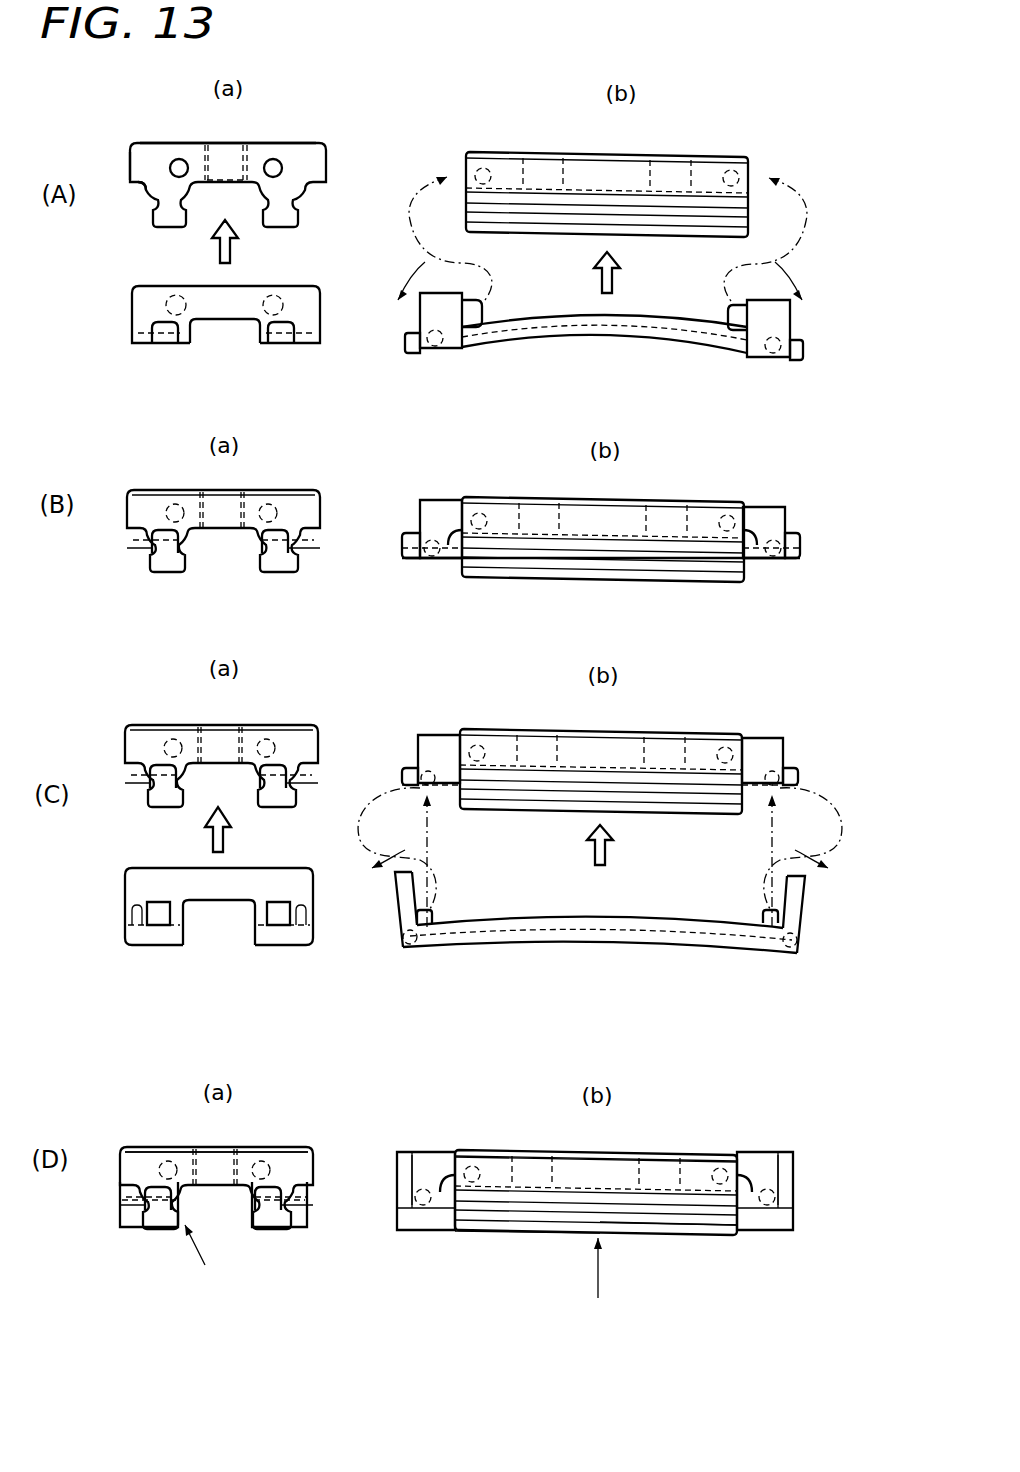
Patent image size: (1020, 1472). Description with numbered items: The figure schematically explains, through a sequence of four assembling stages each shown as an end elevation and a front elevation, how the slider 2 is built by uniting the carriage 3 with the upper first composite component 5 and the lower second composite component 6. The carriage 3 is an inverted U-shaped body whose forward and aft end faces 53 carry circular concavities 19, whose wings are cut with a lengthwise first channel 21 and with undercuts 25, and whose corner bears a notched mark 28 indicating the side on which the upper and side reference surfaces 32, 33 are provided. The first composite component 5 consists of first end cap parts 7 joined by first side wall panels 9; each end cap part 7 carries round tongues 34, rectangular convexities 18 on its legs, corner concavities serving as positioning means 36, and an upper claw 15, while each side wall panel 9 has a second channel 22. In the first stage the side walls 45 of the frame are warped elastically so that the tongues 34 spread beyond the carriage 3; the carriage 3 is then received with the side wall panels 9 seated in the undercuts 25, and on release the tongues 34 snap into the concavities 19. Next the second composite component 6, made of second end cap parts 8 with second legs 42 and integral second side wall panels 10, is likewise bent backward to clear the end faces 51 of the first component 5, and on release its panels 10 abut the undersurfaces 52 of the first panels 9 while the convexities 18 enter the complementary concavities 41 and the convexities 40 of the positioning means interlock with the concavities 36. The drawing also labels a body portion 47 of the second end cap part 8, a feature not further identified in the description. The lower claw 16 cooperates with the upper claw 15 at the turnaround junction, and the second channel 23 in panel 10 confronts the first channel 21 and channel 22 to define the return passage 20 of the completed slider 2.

The slider 2 is at (286, 1142).
The carriage 3 is at (285, 155).
The first composite component 5 is at (300, 292).
The second composite component 6 is at (285, 878).
The first end cap part 7 is at (446, 325).
The second end cap part 8 is at (402, 890).
The first side wall panel 9 is at (605, 333).
The second side wall panel 10 is at (568, 935).
The upper claw 15 is at (190, 343).
The lower claw 16 is at (188, 935).
The convexity 18 is at (410, 348).
The concavity 19 is at (179, 158).
The return passage 20 is at (573, 1215).
The first channel 21 is at (510, 550).
The second channel 22 is at (517, 785).
The second channel 23 is at (517, 930).
The undercut 25 is at (136, 183).
The notched mark 28 is at (150, 181).
The upper reference surface 32 is at (162, 142).
The side reference surface 33 is at (131, 165).
The tongue 34 is at (176, 296).
The positioning means 36 is at (410, 790).
The positioning means 40 is at (432, 915).
The concavity 41 is at (165, 915).
The second leg 42 is at (135, 902).
The side wall 45 is at (397, 1275).
The body portion 47 is at (180, 882).
The end face 51 is at (412, 735).
The bottom 52 is at (540, 345).
The end face 53 is at (462, 172).